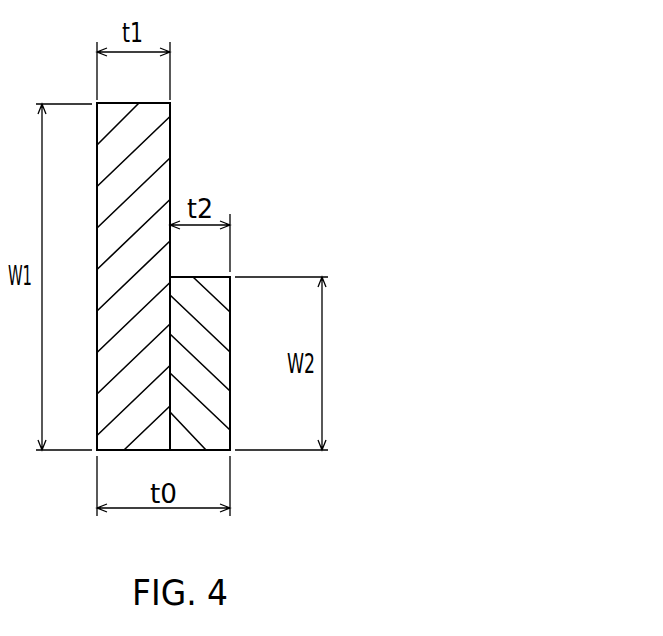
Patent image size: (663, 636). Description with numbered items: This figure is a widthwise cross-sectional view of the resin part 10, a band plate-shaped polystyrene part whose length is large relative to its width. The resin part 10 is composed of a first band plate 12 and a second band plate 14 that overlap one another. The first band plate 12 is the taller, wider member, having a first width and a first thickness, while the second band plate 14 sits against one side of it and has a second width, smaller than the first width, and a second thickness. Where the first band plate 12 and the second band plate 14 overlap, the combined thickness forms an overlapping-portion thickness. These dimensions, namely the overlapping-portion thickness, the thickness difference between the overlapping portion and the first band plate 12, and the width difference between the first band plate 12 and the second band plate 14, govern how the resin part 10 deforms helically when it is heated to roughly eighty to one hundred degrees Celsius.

The resin part 10 is at (222, 241).
The first band plate 12 is at (150, 153).
The second band plate 14 is at (214, 322).